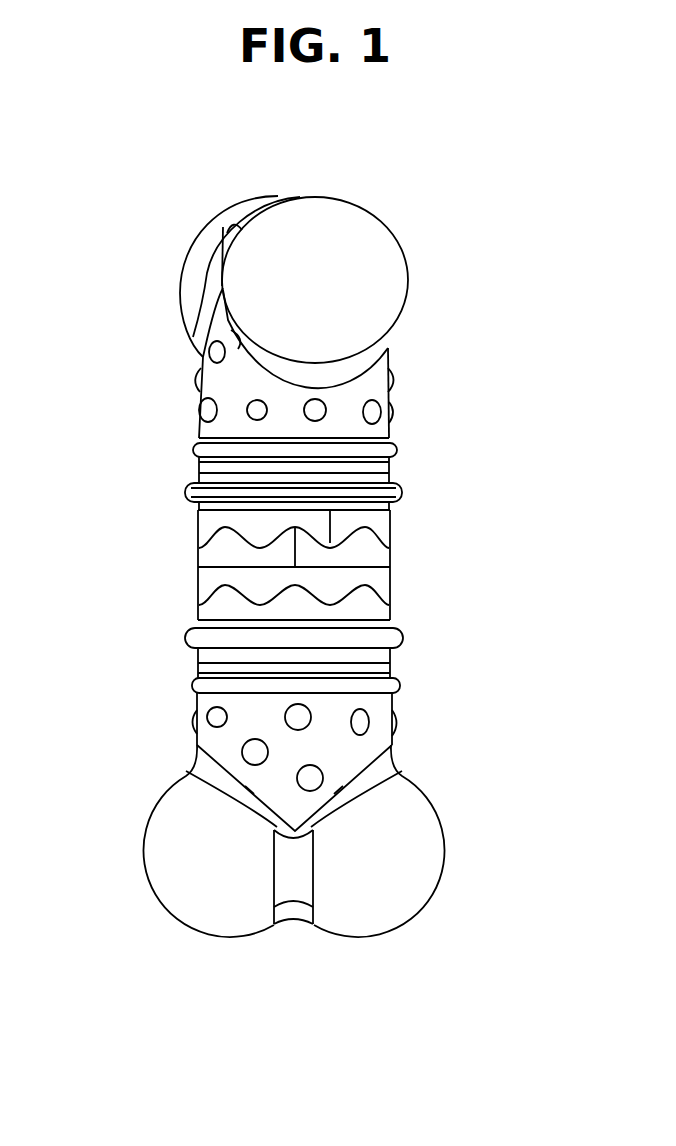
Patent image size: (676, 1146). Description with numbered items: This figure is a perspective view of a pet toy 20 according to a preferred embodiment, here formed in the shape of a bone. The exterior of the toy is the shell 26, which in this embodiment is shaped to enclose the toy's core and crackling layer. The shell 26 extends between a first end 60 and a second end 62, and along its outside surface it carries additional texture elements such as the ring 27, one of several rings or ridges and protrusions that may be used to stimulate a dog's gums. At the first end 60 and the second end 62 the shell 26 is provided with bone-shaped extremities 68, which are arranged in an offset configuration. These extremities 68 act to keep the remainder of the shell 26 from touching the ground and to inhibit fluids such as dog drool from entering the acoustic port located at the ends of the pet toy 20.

The pet toy 20 is at (163, 1000).
The shell 26 is at (390, 225).
The ring 27 is at (400, 493).
The first end 60 is at (320, 167).
The second end 62 is at (297, 953).
The bone-shaped extremities 68 is at (178, 266).